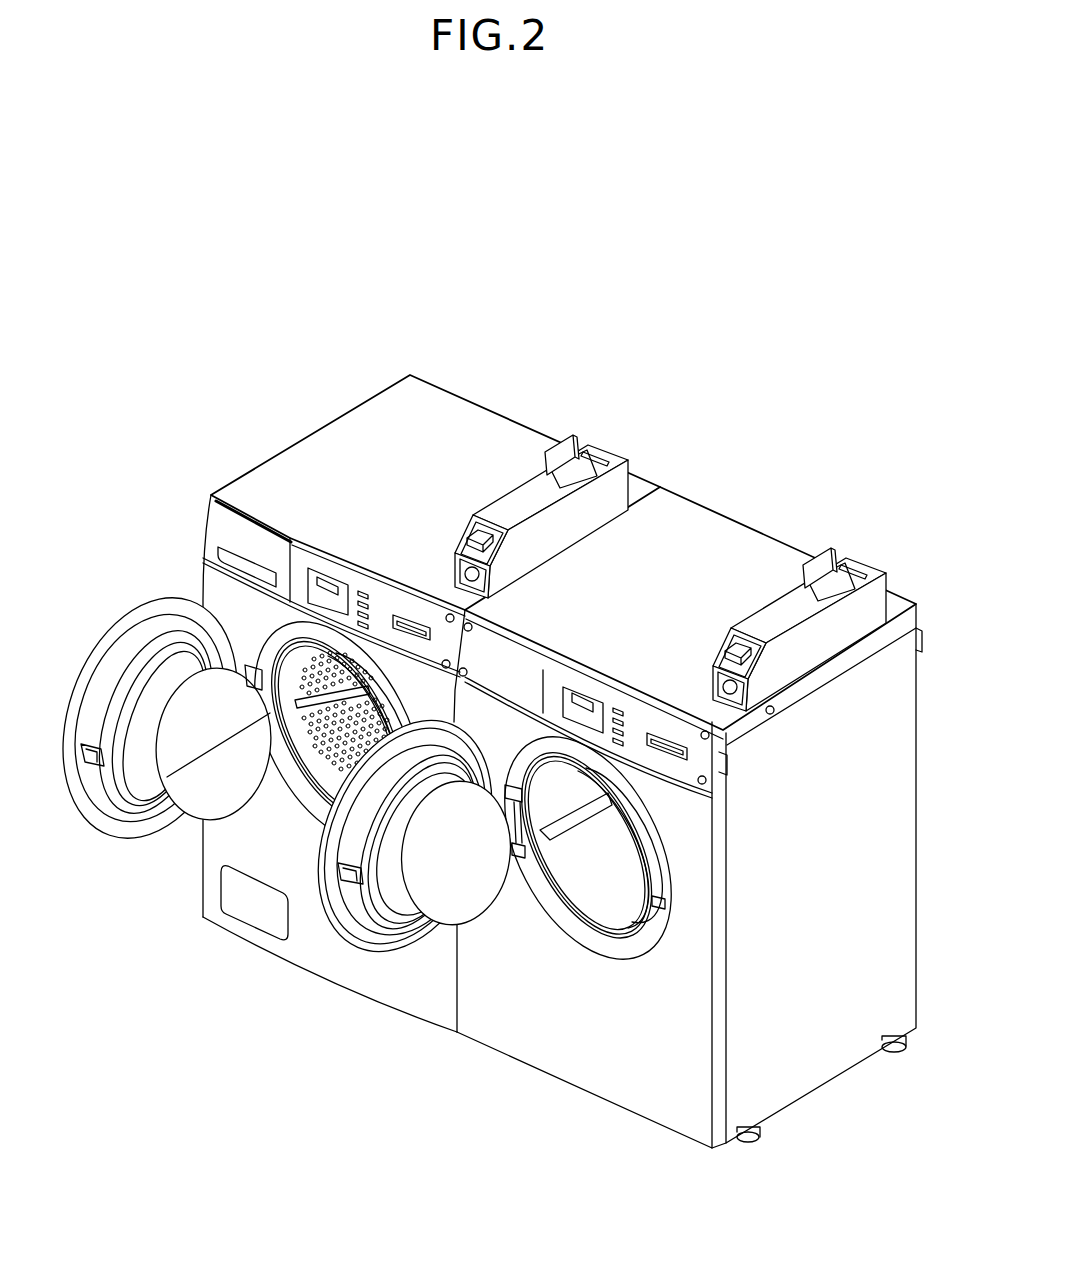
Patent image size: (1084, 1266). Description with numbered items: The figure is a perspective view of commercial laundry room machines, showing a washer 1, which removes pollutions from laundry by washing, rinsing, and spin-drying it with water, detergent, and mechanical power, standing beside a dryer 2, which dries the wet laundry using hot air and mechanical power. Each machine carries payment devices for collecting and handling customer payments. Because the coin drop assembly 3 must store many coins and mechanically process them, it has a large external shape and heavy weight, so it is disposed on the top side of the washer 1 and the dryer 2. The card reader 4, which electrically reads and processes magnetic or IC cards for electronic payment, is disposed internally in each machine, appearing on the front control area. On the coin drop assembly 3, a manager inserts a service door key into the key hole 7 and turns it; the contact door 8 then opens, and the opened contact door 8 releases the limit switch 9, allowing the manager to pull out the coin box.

The washer 1 is at (362, 661).
The dryer 2 is at (593, 1062).
The coin drop assembly 3 is at (520, 507).
The card reader 4 is at (412, 620).
The key hole 7 is at (862, 529).
The contact door 8 is at (830, 509).
The limit switch 9 is at (898, 527).